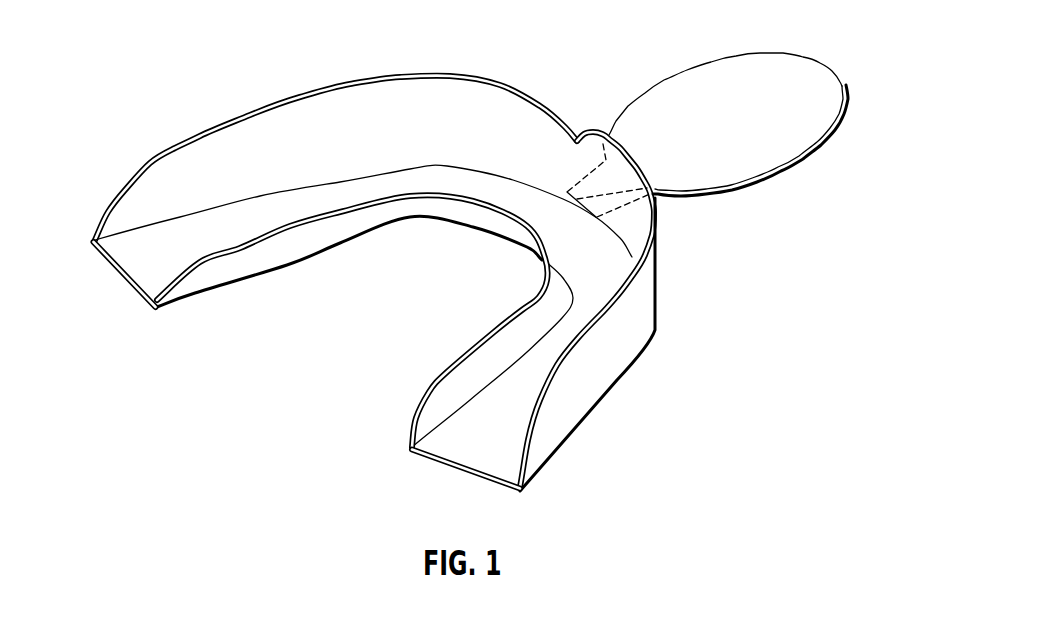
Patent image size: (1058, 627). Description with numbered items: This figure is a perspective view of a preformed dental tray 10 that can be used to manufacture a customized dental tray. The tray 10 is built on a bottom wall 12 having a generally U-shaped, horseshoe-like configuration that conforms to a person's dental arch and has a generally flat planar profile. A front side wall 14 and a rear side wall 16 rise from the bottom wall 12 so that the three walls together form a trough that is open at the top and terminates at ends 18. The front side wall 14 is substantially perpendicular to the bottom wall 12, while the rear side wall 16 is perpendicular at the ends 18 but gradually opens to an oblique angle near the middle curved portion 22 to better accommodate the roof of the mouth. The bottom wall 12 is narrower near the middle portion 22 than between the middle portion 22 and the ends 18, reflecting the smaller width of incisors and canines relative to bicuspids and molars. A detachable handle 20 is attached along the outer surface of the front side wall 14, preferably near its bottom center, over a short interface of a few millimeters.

The preformed dental tray 10 is at (251, 83).
The bottom wall 12 is at (290, 212).
The front side wall 14 is at (627, 318).
The rear side wall 16 is at (487, 362).
The ends 18 is at (131, 284).
The detachable handle 20 is at (708, 60).
The middle curved portion 22 is at (540, 222).